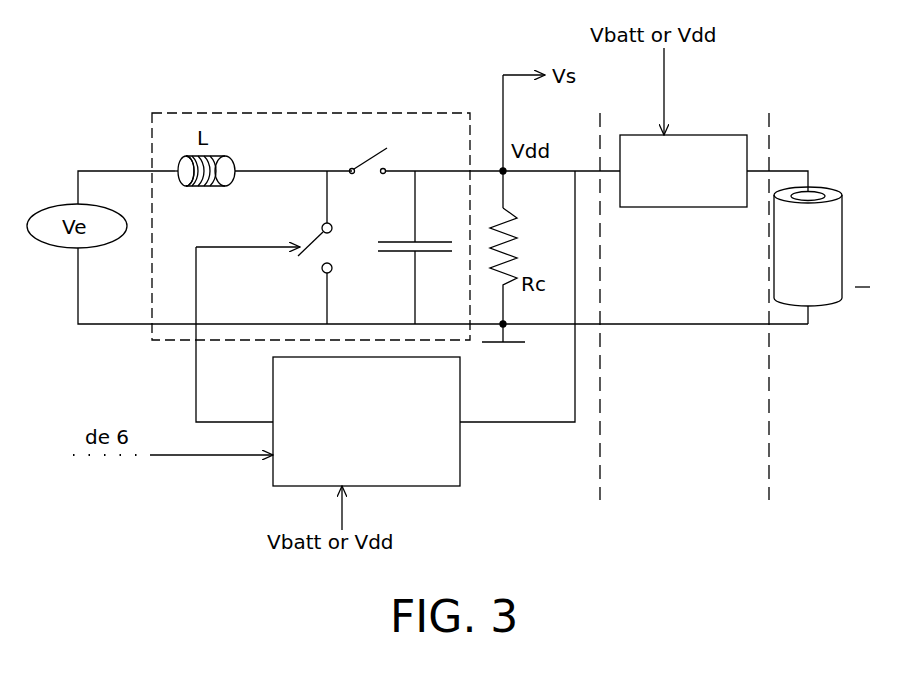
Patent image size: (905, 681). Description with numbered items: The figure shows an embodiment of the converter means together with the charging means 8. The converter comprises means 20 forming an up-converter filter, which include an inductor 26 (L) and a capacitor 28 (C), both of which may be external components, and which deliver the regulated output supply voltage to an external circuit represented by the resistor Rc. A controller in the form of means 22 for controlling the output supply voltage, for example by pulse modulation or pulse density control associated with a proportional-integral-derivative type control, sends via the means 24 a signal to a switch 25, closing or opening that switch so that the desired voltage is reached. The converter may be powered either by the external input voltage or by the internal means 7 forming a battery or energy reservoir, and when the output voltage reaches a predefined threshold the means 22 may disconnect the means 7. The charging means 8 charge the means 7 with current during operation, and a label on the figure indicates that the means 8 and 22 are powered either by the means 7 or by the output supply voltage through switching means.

The means forming an up-converter filter 20 is at (220, 113).
The inductor 26 is at (227, 167).
The switch 25 is at (315, 240).
The capacitor 28 is at (395, 241).
The means for sending a signal 24 is at (196, 380).
The means for controlling Vdd 22 is at (405, 478).
The charging means 8 is at (722, 135).
The internal means for supplying power or forming an energy reservoir 7 is at (826, 293).